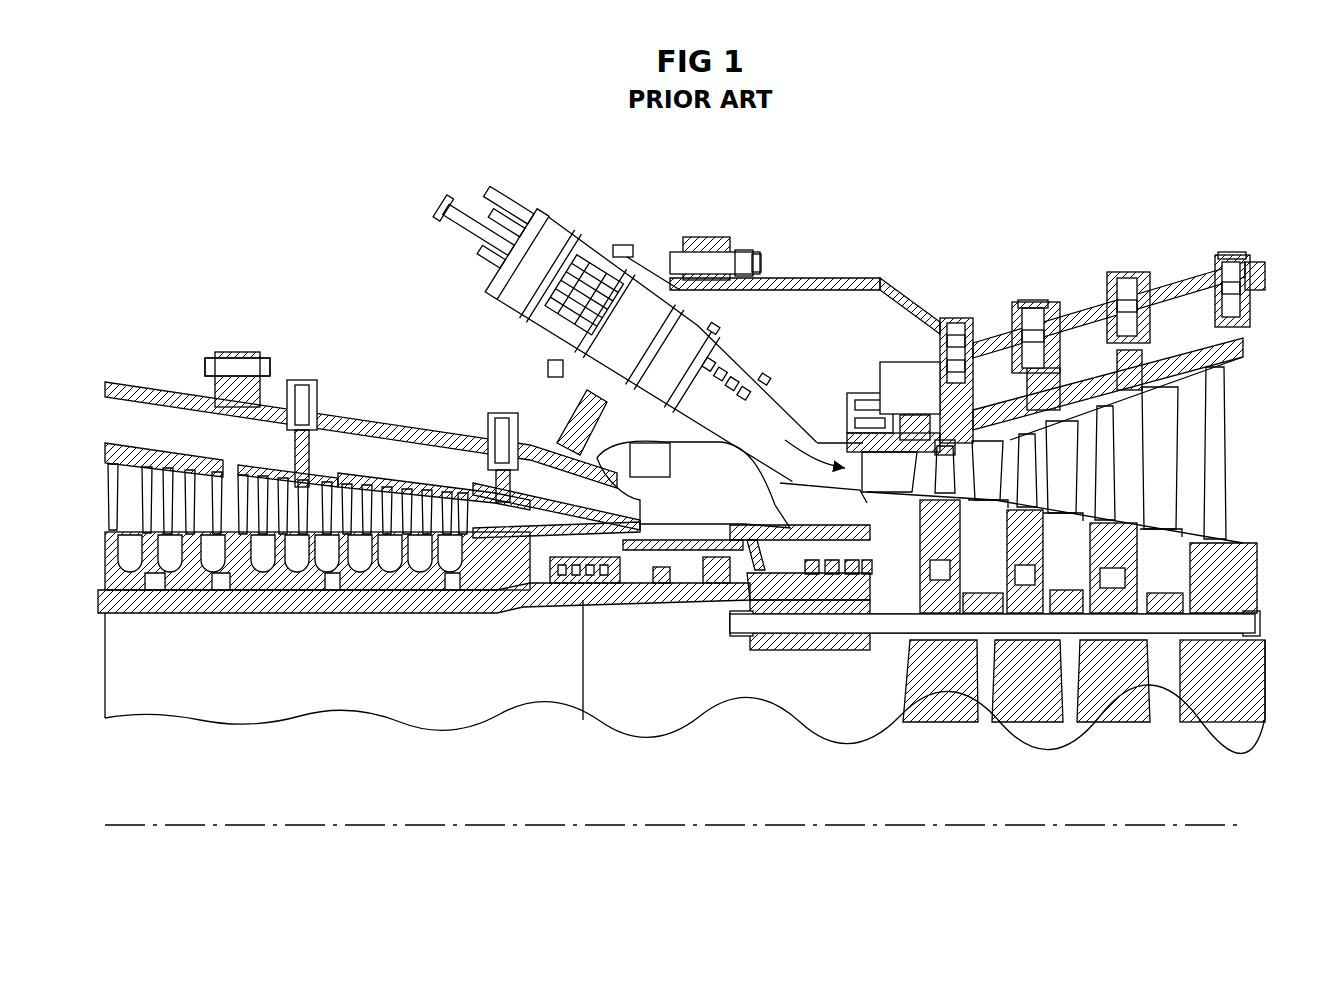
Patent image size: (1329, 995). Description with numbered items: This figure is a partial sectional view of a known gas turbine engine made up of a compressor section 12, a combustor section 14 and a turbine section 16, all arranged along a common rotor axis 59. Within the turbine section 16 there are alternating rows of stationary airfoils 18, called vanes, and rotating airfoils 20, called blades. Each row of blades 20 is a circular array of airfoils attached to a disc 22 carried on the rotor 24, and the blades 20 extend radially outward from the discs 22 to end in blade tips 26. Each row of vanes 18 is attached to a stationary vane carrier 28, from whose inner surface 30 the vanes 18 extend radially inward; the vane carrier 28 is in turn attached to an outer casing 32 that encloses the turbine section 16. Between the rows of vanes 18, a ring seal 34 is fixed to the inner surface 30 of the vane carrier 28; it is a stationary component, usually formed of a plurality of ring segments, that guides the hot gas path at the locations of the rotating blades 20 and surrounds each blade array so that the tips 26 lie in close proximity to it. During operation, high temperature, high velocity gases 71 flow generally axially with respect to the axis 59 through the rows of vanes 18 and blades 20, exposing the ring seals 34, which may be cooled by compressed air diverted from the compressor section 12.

The compressor section 12 is at (165, 333).
The combustor section 14 is at (710, 216).
The turbine section 16 is at (1150, 222).
The stationary airfoils 18 is at (880, 476).
The rotating airfoils 20 is at (1012, 476).
The disc 22 is at (950, 545).
The rotor 24 is at (893, 595).
The blade tips 26 is at (905, 500).
The vane carrier 28 is at (908, 440).
The inner surface 30 is at (950, 490).
The outer casing 32 is at (1185, 273).
The ring seal 34 is at (928, 420).
The axis 59 is at (581, 822).
The gases 71 is at (792, 447).